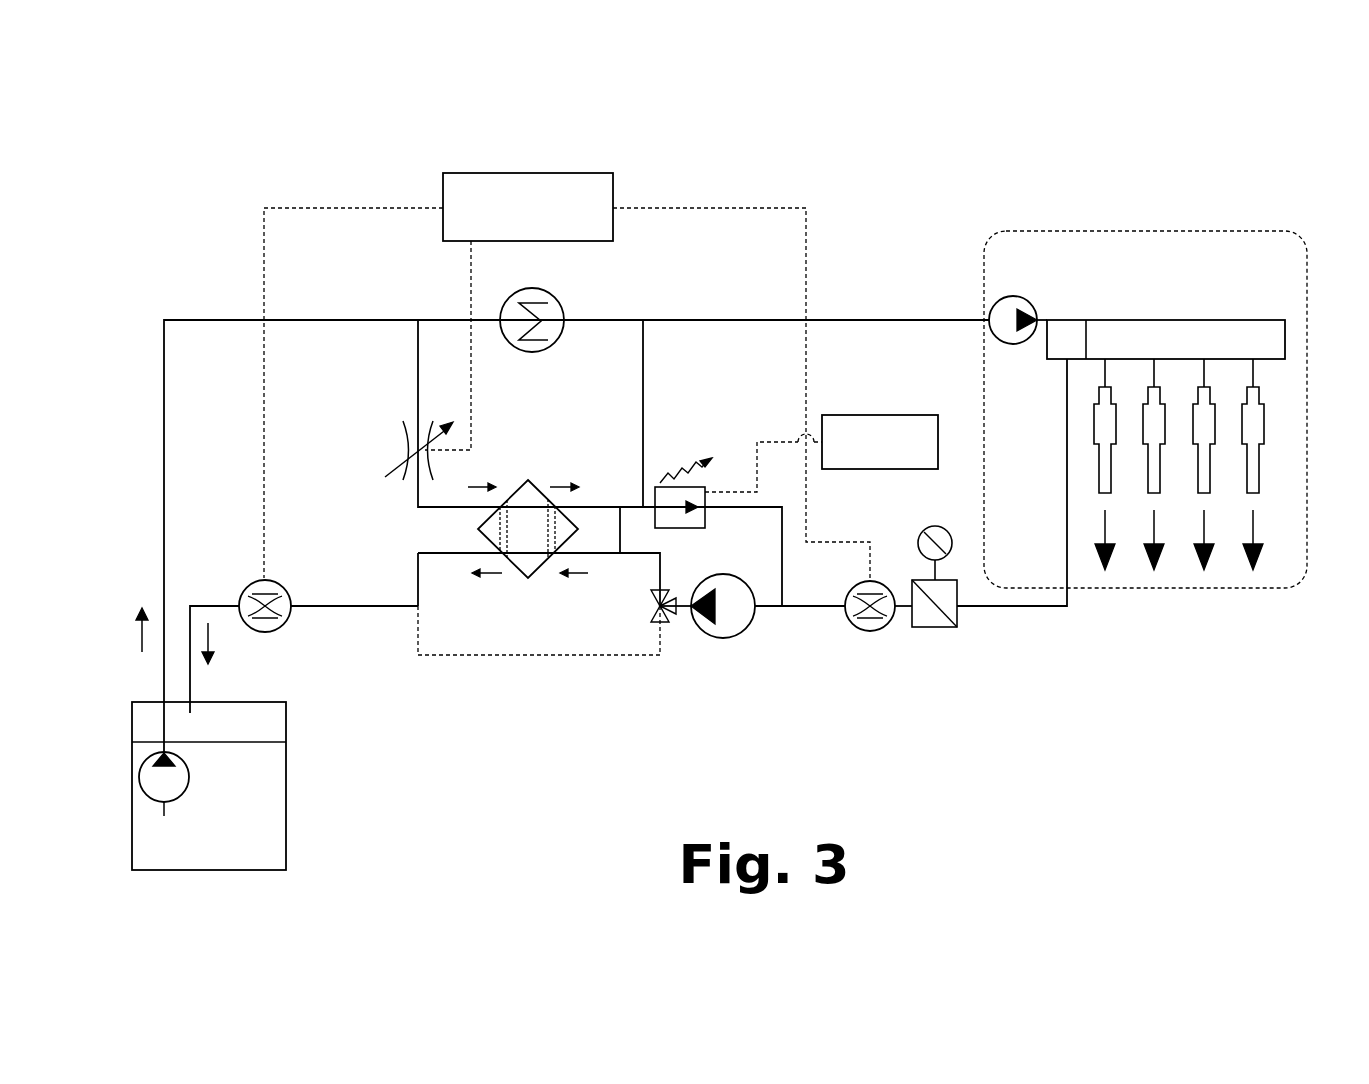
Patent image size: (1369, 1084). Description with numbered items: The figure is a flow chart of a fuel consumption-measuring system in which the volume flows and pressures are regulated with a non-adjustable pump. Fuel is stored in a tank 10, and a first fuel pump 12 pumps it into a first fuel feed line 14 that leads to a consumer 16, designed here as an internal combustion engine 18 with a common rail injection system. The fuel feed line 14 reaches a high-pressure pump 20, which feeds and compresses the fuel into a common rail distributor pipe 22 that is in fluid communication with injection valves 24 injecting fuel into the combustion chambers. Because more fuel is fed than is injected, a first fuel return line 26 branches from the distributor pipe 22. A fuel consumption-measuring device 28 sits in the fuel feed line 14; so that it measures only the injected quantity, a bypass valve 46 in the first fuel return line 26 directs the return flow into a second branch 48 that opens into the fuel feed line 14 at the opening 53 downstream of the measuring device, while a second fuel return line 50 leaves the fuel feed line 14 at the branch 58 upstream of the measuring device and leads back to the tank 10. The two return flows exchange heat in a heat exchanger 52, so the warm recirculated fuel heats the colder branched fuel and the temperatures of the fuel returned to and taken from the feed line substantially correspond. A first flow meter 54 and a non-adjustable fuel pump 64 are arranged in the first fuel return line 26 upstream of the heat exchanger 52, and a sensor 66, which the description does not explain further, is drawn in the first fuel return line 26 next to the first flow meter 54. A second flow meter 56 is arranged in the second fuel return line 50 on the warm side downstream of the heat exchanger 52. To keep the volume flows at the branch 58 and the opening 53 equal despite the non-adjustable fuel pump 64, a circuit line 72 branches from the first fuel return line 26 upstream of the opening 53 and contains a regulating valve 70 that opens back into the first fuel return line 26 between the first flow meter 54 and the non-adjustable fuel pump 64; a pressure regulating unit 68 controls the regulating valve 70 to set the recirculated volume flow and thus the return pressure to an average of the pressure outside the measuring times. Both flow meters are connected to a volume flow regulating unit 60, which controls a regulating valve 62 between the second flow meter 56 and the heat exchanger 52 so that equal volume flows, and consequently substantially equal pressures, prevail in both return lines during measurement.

The tank 10 is at (255, 828).
The first fuel pump 12 is at (140, 781).
The first fuel feed line 14 is at (228, 318).
The consumer 16 is at (1185, 231).
The internal combustion engine 18 is at (1145, 366).
The high-pressure pump 20 is at (1007, 308).
The common rail distributor pipe 22 is at (1205, 333).
The injection valves 24 is at (1258, 422).
The first fuel return line 26 is at (1069, 610).
The fuel consumption-measuring device 28 is at (557, 311).
The bypass valve 46 is at (652, 606).
The second branch 48 is at (620, 507).
The second fuel return line 50 is at (447, 553).
The heat exchanger 52 is at (532, 478).
The opening 53 is at (643, 320).
The first flow meter 54 is at (878, 629).
The second flow meter 56 is at (254, 586).
The branch 58 is at (418, 320).
The volume flow regulating unit 60 is at (546, 193).
The regulating valve 62 is at (412, 452).
The non-adjustable fuel pump 64 is at (730, 630).
The pressure sensor 66 is at (950, 622).
The pressure regulating unit 68 is at (866, 425).
The regulating valve 70 is at (698, 492).
The circuit line 72 is at (783, 548).